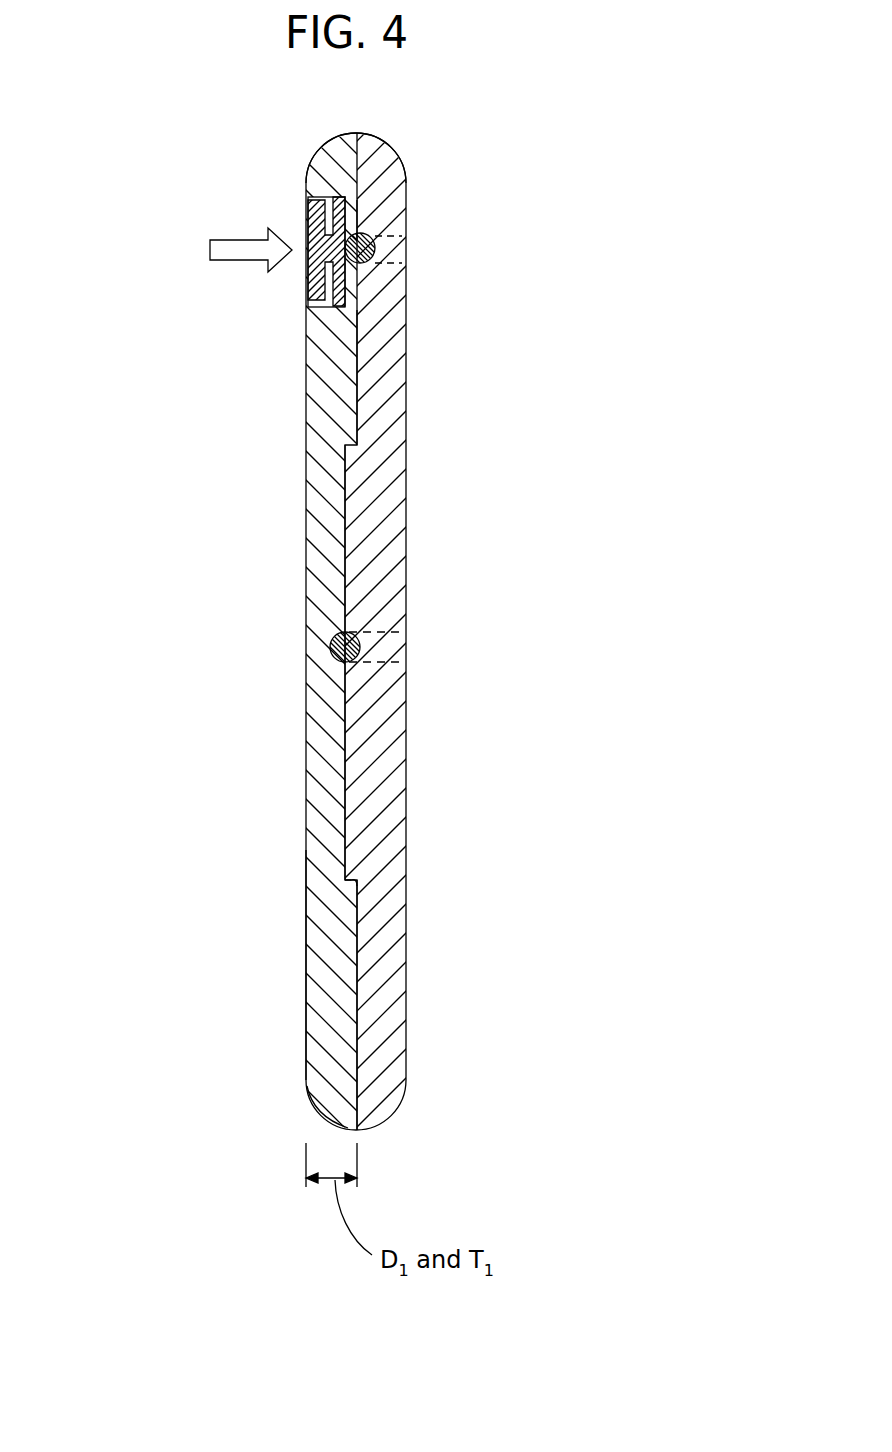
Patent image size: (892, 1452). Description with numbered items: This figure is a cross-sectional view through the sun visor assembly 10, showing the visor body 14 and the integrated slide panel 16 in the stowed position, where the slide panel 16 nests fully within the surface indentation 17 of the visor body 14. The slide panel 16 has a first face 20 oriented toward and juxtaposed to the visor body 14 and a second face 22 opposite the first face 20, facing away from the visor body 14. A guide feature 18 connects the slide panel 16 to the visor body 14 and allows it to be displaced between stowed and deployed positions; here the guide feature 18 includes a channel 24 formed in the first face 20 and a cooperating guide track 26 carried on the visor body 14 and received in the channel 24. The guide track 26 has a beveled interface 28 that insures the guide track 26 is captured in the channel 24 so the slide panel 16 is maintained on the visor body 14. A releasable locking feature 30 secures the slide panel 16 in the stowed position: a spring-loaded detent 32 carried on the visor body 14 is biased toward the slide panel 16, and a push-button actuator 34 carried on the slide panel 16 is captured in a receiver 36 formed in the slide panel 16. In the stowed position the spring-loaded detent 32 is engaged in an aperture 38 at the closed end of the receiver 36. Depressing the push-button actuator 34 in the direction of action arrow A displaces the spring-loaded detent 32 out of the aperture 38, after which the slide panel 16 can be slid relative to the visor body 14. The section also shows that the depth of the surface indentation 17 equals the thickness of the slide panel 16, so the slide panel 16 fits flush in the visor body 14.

The sun visor assembly 10 is at (578, 175).
The visor body 14 is at (397, 461).
The slide panel 16 is at (307, 515).
The surface indentation 17 is at (350, 362).
The guide feature 18 is at (285, 875).
The first face 20 is at (358, 988).
The second face 22 is at (305, 962).
The channel 24 is at (345, 767).
The guide track 26 is at (343, 590).
The beveled interface 28 is at (357, 886).
The releasable locking feature 30 is at (278, 214).
The spring-loaded detent 32 is at (373, 249).
The push-button actuator 34 is at (318, 274).
The receiver 36 is at (333, 215).
The aperture 38 is at (353, 238).
The action arrow A is at (228, 250).